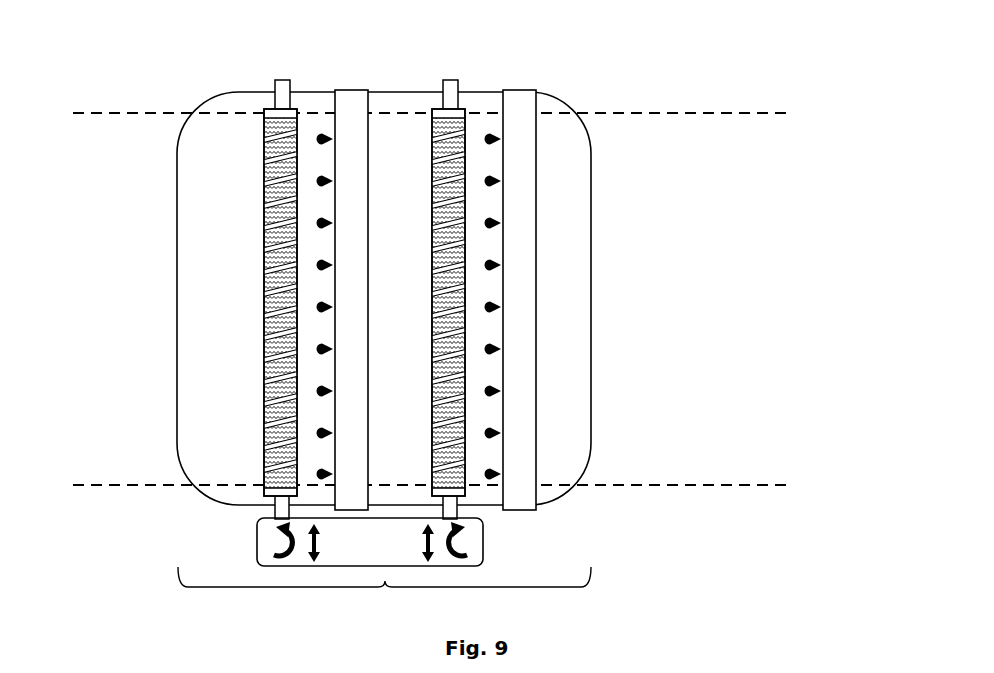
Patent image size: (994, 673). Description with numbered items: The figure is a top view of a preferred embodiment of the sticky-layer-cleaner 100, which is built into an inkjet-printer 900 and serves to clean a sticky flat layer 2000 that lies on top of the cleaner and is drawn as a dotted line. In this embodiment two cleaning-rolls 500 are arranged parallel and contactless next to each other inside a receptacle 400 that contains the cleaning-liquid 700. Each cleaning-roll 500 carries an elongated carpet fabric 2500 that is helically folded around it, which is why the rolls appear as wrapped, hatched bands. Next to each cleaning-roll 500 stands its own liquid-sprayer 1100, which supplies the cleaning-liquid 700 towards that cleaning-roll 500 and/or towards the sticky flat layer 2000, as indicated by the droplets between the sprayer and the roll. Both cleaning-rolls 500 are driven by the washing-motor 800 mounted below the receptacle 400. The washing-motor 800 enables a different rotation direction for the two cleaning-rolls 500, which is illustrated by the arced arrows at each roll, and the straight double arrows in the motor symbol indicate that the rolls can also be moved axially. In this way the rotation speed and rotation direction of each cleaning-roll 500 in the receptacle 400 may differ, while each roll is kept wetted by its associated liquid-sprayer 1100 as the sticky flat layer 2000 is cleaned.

The sticky-layer-cleaner 100 is at (385, 583).
The receptacle 400 is at (591, 235).
The cleaning-roll 500 is at (331, 277).
The cleaning-liquid 700 is at (208, 320).
The washing-motor 800 is at (257, 545).
The inkjet-printer 900 is at (845, 65).
The liquid-sprayer 1100 is at (356, 92).
The sticky flat layer 2000 is at (141, 460).
The elongated carpet fabric 2500 is at (274, 290).